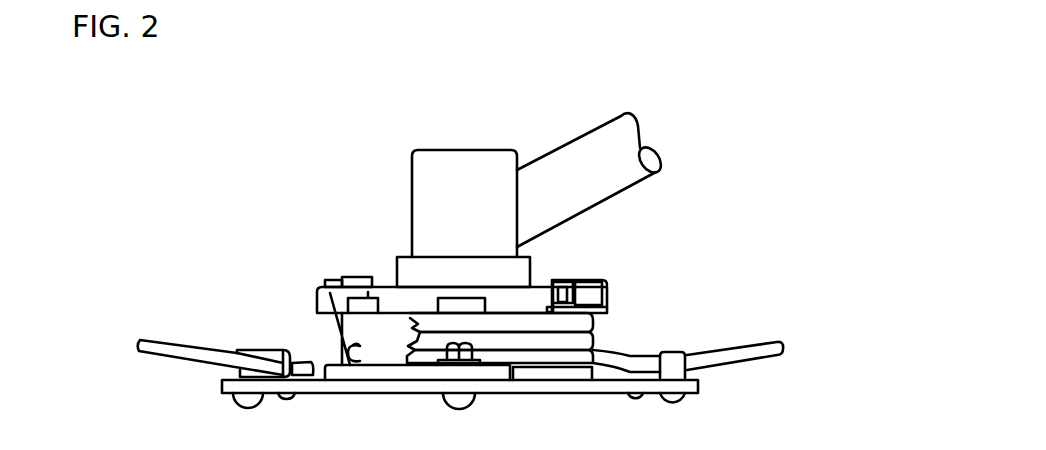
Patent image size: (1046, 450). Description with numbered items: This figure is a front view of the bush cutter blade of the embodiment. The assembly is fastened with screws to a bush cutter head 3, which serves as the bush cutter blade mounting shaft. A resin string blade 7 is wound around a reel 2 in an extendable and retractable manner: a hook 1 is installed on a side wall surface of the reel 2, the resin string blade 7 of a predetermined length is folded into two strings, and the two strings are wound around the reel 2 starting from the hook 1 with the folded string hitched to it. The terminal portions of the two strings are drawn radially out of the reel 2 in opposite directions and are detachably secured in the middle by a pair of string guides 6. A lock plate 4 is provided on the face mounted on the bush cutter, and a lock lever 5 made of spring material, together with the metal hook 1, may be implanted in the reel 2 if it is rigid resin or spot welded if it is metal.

The hook 1 is at (325, 282).
The reel 2 is at (397, 322).
The bush cutter head 3 is at (433, 197).
The lock plate 4 is at (508, 298).
The lock lever 5 is at (585, 290).
The string guide 6 is at (670, 358).
The resin string blade 7 is at (722, 360).